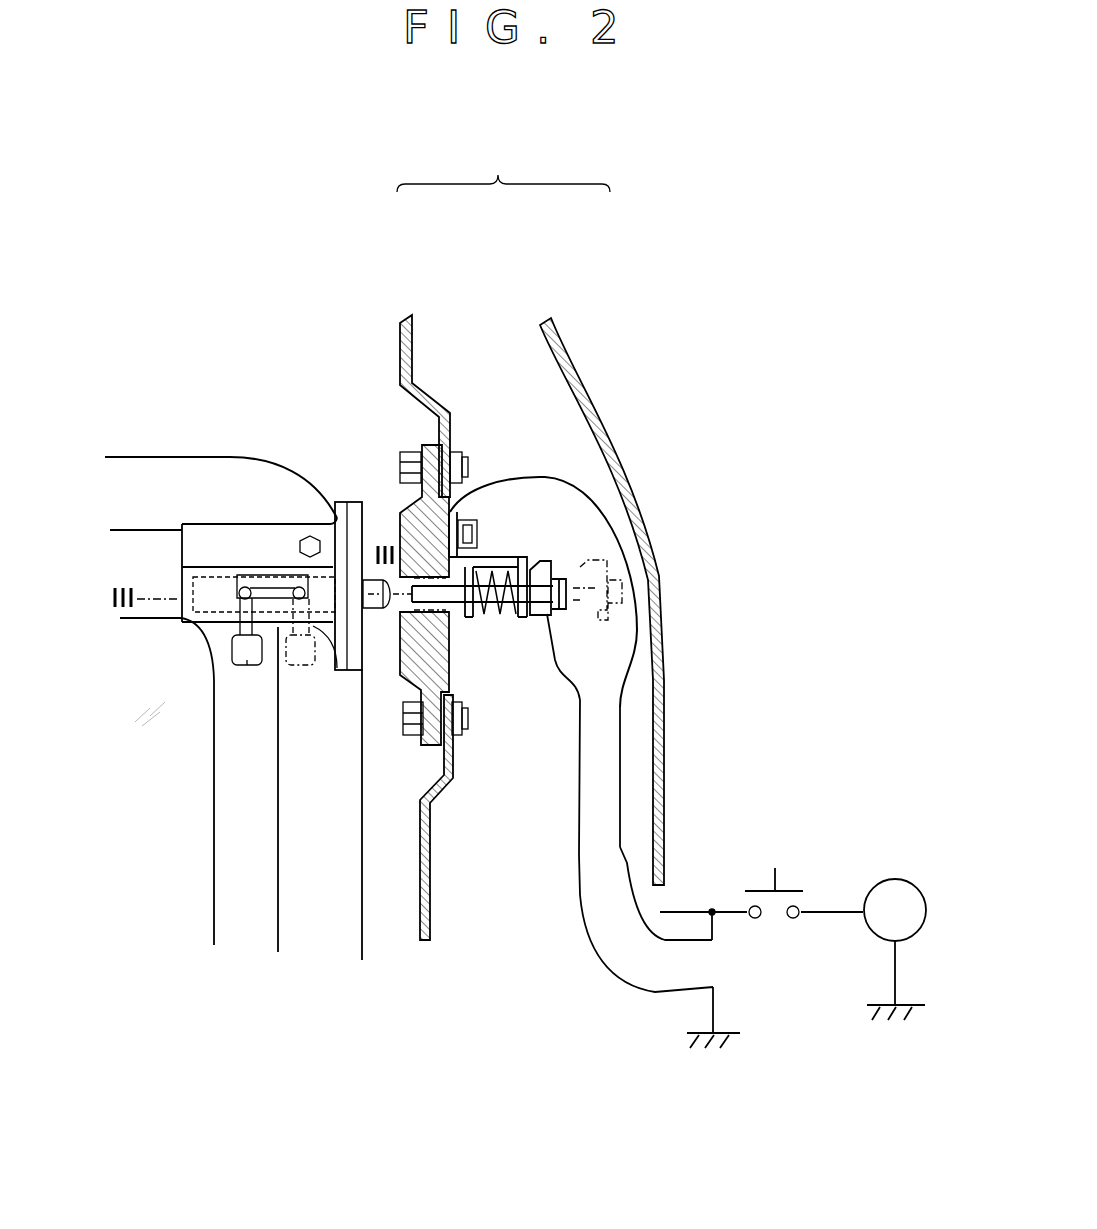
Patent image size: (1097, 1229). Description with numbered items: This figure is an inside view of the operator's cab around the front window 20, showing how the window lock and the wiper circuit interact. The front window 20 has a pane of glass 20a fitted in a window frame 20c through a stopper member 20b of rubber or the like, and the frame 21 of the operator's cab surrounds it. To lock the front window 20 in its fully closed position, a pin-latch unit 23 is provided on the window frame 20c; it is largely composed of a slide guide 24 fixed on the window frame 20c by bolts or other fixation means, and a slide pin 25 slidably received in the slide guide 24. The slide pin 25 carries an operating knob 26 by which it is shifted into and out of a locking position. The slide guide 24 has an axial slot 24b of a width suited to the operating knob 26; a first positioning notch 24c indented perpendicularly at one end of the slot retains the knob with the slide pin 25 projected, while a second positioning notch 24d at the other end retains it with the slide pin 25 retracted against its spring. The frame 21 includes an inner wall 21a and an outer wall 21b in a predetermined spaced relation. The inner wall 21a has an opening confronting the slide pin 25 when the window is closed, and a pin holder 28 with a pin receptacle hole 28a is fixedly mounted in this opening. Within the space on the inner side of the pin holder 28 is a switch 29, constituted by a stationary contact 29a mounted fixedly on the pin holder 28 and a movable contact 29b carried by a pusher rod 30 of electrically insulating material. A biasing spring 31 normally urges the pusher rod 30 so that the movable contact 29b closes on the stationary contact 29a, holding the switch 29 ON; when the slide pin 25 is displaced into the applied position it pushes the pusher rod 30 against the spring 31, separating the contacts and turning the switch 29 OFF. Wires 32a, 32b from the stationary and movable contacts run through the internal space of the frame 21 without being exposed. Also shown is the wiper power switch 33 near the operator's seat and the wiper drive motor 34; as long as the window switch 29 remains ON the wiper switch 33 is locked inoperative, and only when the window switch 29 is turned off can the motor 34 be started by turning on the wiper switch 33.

The front window 20 is at (203, 456).
The pane of glass 20a is at (160, 727).
The stopper member 20b is at (160, 547).
The window frame 20c is at (198, 483).
The frame 21 is at (503, 163).
The inner wall 21a is at (408, 334).
The outer wall 21b is at (563, 330).
The pin-latch unit 23 is at (270, 524).
The slide guide 24 is at (190, 590).
The axial slot 24b is at (267, 586).
The first positioning notch 24c is at (300, 640).
The second positioning notch 24d is at (243, 593).
The slide pin 25 is at (370, 610).
The operating knob 26 is at (247, 662).
The pin holder 28 is at (443, 500).
The pin receptacle hole 28a is at (438, 603).
The switch 29 is at (552, 546).
The stationary contact 29a is at (490, 557).
The movable contact 29b is at (552, 565).
The pusher rod 30 is at (542, 596).
The biasing spring 31 is at (492, 617).
The wire 32a is at (630, 673).
The wire 32b is at (593, 960).
The power switch 33 is at (775, 868).
The wiper drive motor 34 is at (895, 877).